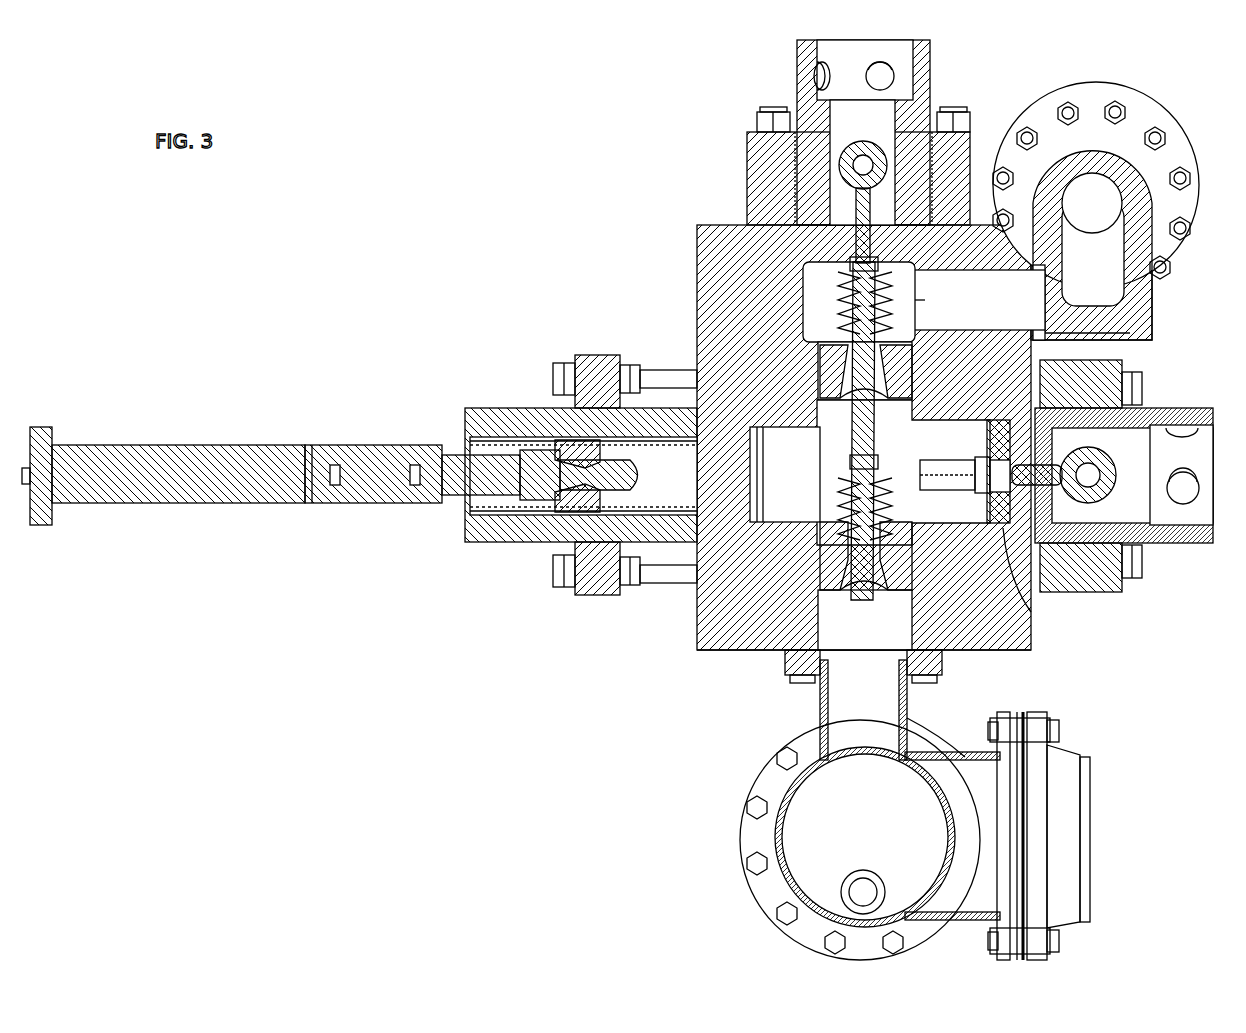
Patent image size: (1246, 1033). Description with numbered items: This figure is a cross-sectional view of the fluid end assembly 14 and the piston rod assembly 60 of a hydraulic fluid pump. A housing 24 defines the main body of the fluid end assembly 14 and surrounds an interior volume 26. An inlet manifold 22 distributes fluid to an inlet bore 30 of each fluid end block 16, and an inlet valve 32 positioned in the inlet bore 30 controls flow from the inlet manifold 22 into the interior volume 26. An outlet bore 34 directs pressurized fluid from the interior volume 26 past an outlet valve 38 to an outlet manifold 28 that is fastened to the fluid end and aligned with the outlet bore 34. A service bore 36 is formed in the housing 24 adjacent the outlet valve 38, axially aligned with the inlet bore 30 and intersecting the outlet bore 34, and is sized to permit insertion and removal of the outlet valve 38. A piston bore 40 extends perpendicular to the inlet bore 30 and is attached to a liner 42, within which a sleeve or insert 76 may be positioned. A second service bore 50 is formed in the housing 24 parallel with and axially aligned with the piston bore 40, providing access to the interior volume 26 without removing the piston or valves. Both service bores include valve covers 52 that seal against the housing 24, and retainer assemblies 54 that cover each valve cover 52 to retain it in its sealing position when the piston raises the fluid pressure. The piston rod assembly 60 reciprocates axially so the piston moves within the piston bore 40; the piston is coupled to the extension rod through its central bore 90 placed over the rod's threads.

The fluid end assembly 14 is at (675, 755).
The fluid end block 16 is at (697, 292).
The inlet manifold 22 is at (1002, 912).
The housing 24 is at (1031, 652).
The interior volume 26 is at (876, 440).
The outlet manifold 28 is at (1178, 130).
The inlet bore 30 is at (912, 606).
The inlet valve 32 is at (835, 525).
The outlet bore 34 is at (970, 270).
The service bore 36 is at (905, 272).
The outlet valve 38 is at (838, 398).
The piston bore 40 is at (770, 430).
The liner 42 is at (487, 545).
The second service bore 50 is at (1032, 613).
The valve cover 52 is at (828, 262).
The retainer assembly 54 is at (747, 192).
The piston rod assembly 60 is at (242, 505).
The sleeve or insert 76 is at (522, 517).
The central bore 90 is at (560, 440).